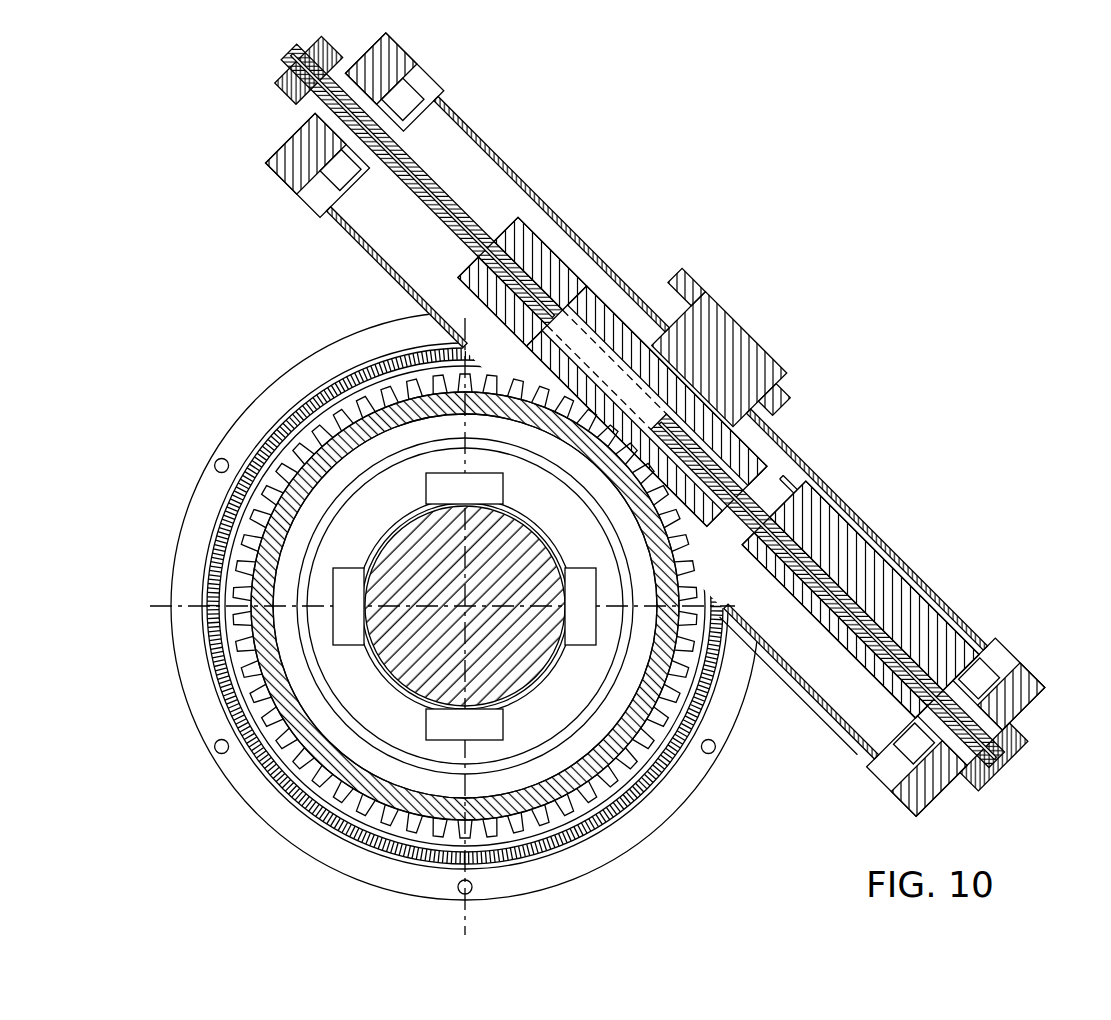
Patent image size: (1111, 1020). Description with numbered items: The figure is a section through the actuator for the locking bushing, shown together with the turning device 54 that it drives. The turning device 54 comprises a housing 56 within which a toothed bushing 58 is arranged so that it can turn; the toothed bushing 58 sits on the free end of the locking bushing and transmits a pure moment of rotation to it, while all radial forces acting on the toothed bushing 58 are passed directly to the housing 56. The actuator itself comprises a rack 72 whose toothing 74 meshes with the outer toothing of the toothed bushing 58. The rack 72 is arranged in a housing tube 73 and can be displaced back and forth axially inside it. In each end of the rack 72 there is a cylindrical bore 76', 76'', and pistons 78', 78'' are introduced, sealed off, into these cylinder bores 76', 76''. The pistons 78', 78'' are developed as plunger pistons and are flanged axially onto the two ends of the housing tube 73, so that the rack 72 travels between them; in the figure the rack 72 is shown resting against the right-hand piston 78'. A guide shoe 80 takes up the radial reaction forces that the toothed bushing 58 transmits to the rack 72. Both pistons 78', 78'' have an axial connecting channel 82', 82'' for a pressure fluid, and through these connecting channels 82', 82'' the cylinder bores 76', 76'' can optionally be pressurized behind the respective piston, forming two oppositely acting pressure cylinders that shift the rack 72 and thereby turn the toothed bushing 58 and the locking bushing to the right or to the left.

The turning device 54 is at (232, 818).
The housing 56 is at (628, 813).
The toothed bushing 58 is at (665, 752).
The rack 72 is at (763, 491).
The housing tube 73 is at (856, 540).
The toothing 74 is at (770, 690).
The cylindrical bore 76' is at (612, 371).
The cylindrical bore 76'' is at (864, 599).
The piston 78' is at (435, 125).
The piston 78'' is at (957, 691).
The guide shoe 80 is at (716, 336).
The axial connecting channel 82' is at (406, 83).
The axial connecting channel 82'' is at (1035, 732).